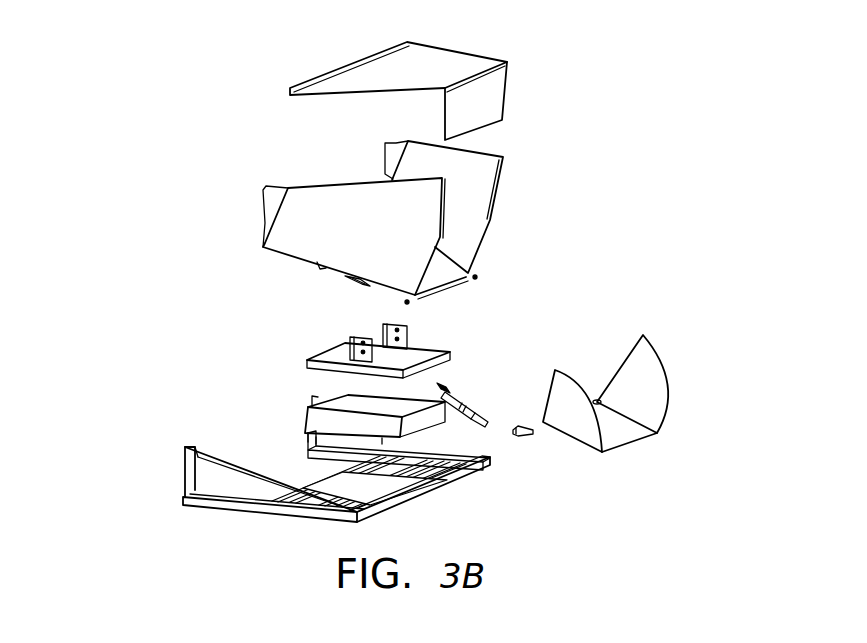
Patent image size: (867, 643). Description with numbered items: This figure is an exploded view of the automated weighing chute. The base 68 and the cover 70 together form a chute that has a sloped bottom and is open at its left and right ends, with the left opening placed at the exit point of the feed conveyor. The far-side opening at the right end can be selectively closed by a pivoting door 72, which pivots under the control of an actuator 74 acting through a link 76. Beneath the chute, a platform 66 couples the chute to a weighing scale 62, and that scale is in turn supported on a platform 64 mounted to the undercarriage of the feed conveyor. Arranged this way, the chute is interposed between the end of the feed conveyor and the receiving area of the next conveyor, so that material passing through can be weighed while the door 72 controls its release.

The weighing scale 62 is at (306, 412).
The platform 64 is at (178, 467).
The platform 66 is at (454, 353).
The base 68 is at (488, 236).
The cover 70 is at (488, 92).
The pivoting door 72 is at (673, 350).
The actuator 74 is at (478, 405).
The link 76 is at (524, 440).